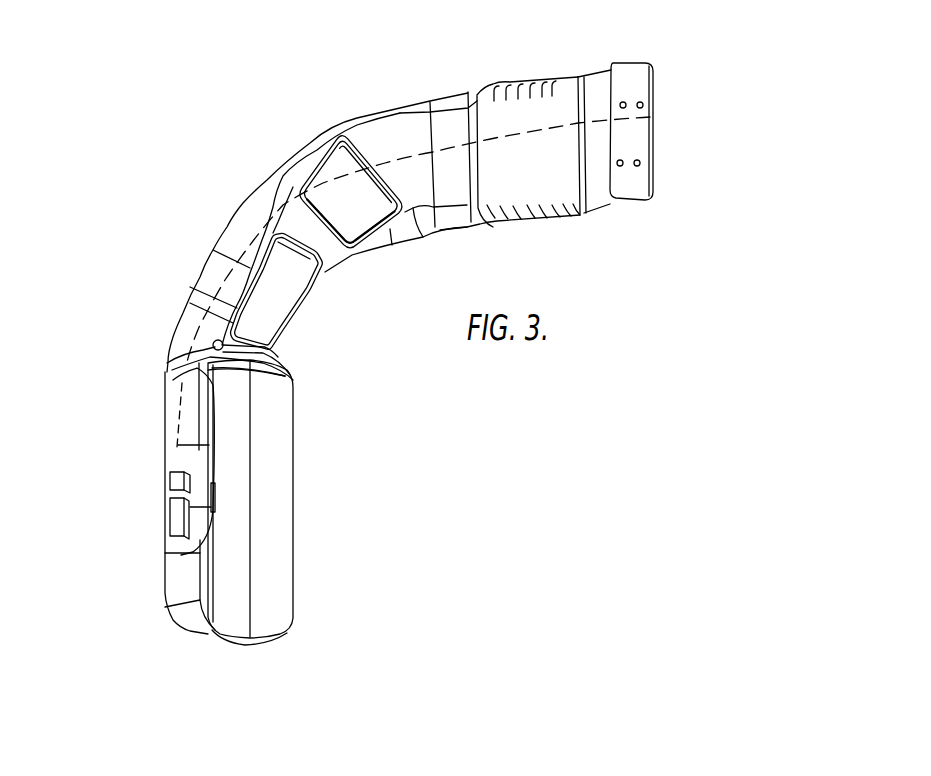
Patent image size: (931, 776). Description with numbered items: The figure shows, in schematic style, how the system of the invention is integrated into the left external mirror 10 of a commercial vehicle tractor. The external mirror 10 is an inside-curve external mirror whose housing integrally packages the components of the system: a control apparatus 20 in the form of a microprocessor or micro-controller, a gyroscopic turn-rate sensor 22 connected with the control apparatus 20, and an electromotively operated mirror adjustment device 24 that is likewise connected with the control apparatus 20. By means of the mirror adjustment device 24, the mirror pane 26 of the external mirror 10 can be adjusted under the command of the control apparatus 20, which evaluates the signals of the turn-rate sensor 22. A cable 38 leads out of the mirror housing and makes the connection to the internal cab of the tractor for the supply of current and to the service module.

The external mirror 10 is at (354, 331).
The control apparatus 20 is at (177, 527).
The gyroscopic turn-rate sensor 22 is at (178, 485).
The mirror adjustment device 24 is at (212, 487).
The mirror pane 26 is at (273, 486).
The cable 38 is at (352, 197).